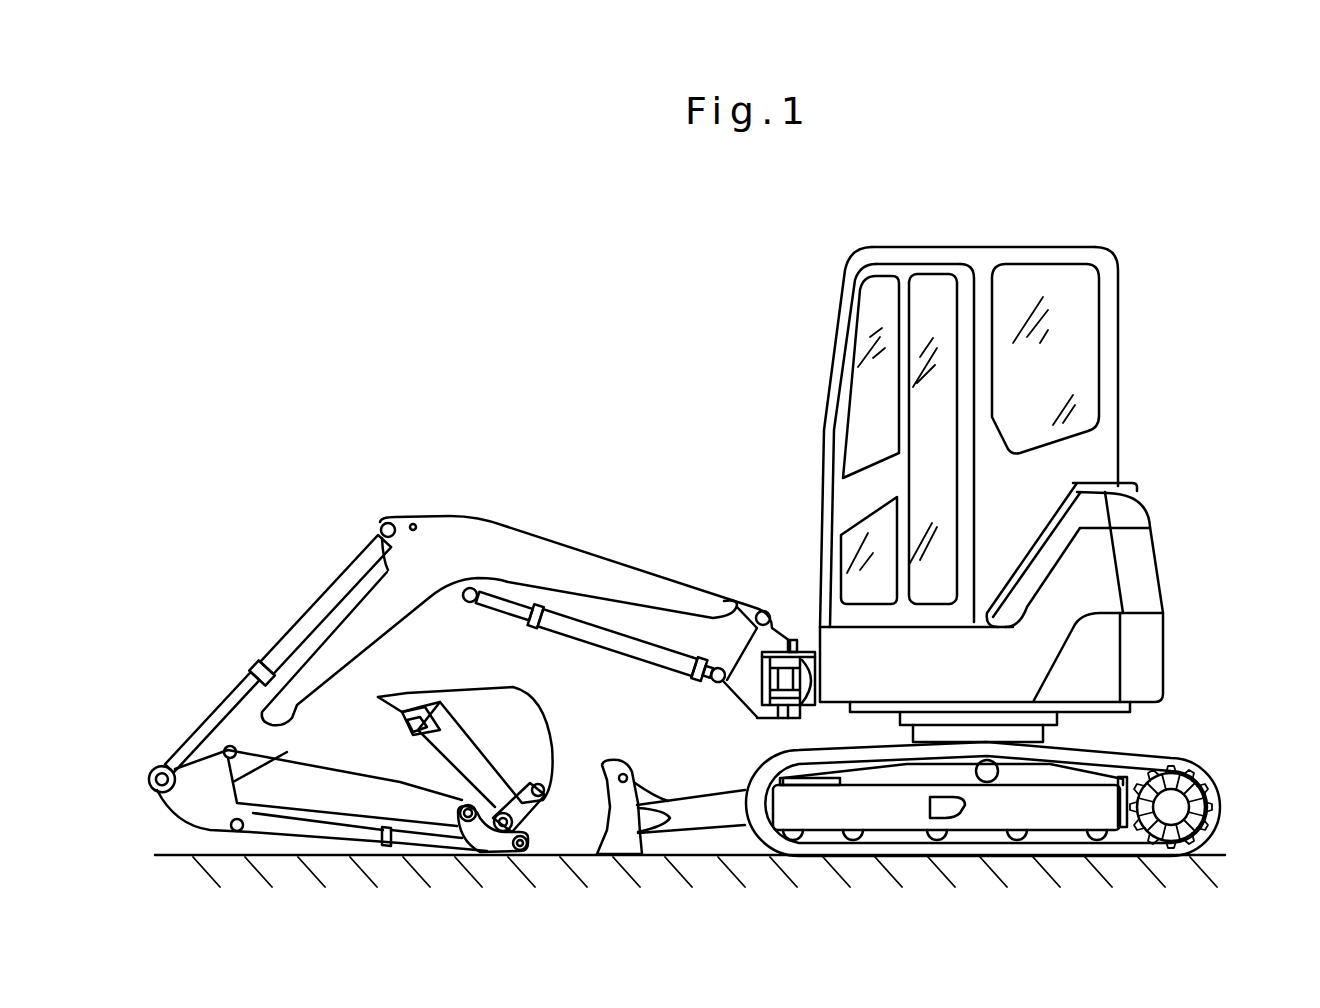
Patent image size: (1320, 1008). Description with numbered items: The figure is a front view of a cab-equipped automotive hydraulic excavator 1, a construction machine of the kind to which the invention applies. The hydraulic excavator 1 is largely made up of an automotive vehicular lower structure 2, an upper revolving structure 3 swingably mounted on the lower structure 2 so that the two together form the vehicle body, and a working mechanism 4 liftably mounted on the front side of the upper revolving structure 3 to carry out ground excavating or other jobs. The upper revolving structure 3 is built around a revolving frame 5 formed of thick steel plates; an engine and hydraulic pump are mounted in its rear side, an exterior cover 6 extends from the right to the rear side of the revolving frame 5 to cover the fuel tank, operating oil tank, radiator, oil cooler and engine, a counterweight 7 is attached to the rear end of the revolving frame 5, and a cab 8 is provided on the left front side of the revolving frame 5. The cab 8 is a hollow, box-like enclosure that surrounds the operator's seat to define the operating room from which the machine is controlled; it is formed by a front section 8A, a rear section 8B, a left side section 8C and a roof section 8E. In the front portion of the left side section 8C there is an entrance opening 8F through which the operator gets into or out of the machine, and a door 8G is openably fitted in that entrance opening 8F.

The hydraulic excavator 1 is at (690, 471).
The vehicular lower structure 2 is at (1217, 810).
The upper revolving structure 3 is at (1183, 569).
The working mechanism 4 is at (474, 538).
The revolving frame 5 is at (1090, 713).
The exterior cover 6 is at (1137, 508).
The counterweight 7 is at (1147, 660).
The cab 8 is at (1059, 230).
The front section 8A is at (828, 343).
The rear section 8B is at (1122, 347).
The left side section 8C is at (985, 283).
The roof section 8E is at (912, 247).
The entrance opening 8F is at (840, 447).
The door 8G is at (855, 495).